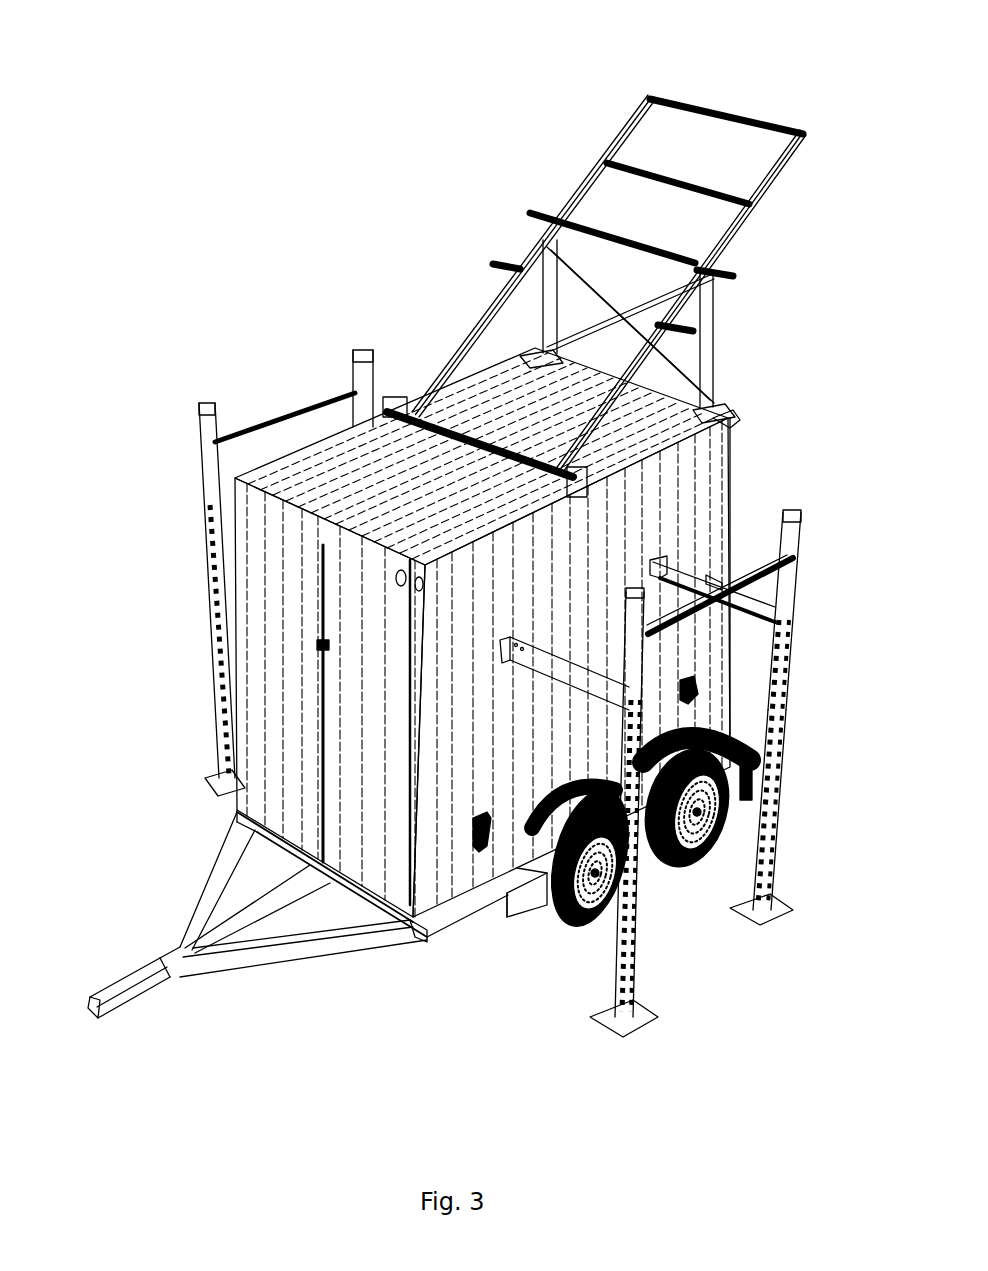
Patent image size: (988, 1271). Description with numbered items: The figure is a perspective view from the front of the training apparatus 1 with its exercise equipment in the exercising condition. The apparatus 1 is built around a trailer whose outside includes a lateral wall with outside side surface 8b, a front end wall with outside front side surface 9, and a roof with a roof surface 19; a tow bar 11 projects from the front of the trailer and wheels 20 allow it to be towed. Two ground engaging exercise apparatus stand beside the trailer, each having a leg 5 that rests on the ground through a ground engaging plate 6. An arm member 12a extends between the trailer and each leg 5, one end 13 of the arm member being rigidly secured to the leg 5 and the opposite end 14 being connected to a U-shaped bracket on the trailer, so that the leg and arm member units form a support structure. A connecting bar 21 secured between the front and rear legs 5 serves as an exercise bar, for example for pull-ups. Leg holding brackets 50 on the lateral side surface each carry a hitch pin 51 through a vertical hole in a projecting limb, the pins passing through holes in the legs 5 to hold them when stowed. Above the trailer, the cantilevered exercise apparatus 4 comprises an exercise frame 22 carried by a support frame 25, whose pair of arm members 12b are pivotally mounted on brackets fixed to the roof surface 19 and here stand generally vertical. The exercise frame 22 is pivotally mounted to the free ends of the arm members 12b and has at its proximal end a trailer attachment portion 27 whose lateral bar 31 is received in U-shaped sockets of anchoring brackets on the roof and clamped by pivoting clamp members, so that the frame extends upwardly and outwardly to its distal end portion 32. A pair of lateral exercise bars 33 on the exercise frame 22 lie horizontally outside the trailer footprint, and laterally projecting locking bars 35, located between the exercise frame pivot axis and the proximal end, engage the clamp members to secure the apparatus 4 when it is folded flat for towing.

The training apparatus 1 is at (337, 280).
The cantilevered exercise apparatus 4 is at (573, 183).
The leg 5 is at (783, 737).
The ground engaging plate 6 is at (630, 1040).
The outside side surface 8b is at (463, 757).
The outside front side surface 9 is at (295, 652).
The tow bar 11 is at (213, 878).
The arm member 12a is at (713, 577).
The arm member 12b is at (718, 562).
The end 13 is at (790, 590).
The opposite end 14 is at (657, 560).
The roof surface 19 is at (302, 486).
The wheels 20 is at (567, 923).
The connecting bar 21 is at (702, 612).
The exercise frame 22 is at (485, 312).
The support frame 25 is at (718, 313).
The trailer attachment portion 27 is at (455, 440).
The lateral bar 31 is at (487, 450).
The distal end portion 32 is at (753, 117).
The lateral exercise bars 33 is at (653, 170).
The locking bars 35 is at (502, 258).
The leg holding bracket 50 is at (480, 840).
The hitch pin 51 is at (427, 933).